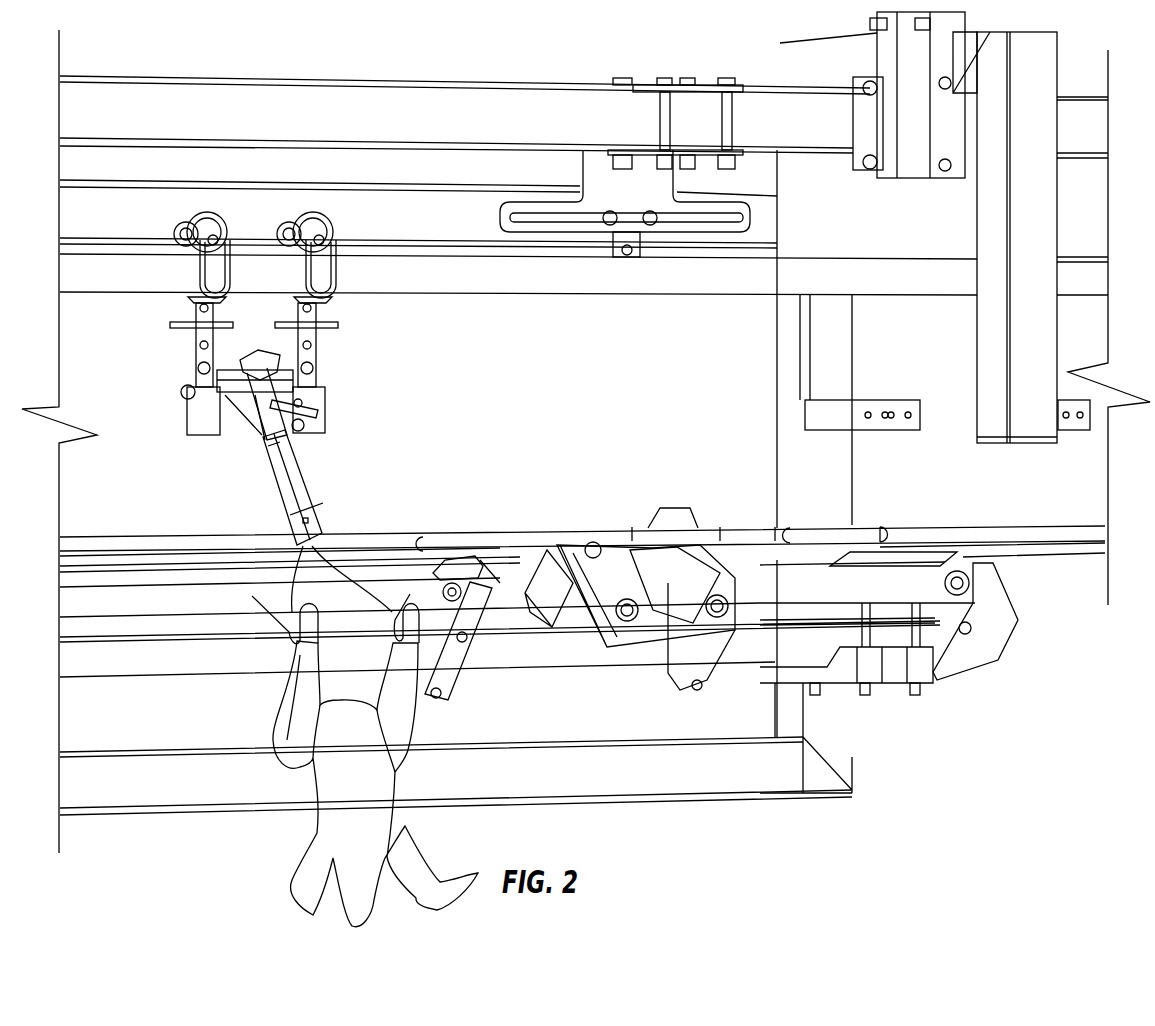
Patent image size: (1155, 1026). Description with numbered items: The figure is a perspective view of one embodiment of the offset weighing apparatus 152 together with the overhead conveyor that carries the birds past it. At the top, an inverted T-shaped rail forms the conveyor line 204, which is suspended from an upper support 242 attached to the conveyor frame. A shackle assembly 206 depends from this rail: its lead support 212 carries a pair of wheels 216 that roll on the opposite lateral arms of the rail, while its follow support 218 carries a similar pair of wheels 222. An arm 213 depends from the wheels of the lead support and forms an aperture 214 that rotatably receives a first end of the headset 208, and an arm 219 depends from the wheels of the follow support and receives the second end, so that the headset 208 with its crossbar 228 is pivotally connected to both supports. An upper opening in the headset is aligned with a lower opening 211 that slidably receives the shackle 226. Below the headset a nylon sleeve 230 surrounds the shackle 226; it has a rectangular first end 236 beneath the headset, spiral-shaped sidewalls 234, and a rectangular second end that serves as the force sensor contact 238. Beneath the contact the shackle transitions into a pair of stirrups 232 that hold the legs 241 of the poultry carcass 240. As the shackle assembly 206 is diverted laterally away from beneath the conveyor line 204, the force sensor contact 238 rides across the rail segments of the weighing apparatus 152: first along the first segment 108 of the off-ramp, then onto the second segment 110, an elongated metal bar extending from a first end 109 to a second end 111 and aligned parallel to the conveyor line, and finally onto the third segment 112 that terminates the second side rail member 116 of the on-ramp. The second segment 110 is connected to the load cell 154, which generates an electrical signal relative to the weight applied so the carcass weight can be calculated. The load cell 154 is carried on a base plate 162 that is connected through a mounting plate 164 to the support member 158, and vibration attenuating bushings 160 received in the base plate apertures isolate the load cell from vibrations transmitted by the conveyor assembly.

The upper support 242 is at (378, 100).
The conveyor line 204 is at (527, 284).
The wheels 222 is at (175, 226).
The wheels 216 is at (328, 228).
The follow support 218 is at (175, 310).
The lead support 212 is at (365, 310).
The headset 208 is at (348, 343).
The aperture 214 is at (325, 385).
The shackle assembly 206 is at (363, 405).
The crossbar 228 is at (181, 392).
The arm 213 is at (322, 433).
The arm 219 is at (190, 435).
The lower opening 211 is at (265, 441).
The sidewall 234 is at (293, 475).
The rectangular first end 236 is at (268, 480).
The shackle 226 is at (335, 497).
The force sensor contact 238 is at (322, 527).
The sleeve 230 is at (293, 497).
The stirrups 232 is at (250, 614).
The legs 241 is at (298, 695).
The poultry carcass 240 is at (335, 812).
The first segment 108 is at (515, 540).
The first end 109 is at (638, 540).
The load cell 154 is at (665, 515).
The second segment 110 is at (728, 540).
The second end 111 is at (775, 540).
The third segment 112 is at (838, 535).
The second side rail member 116 is at (975, 540).
The support member 158 is at (481, 660).
The base plate 162 is at (605, 588).
The weighing apparatus 152 is at (600, 655).
The vibration attenuating bushings 160 is at (630, 615).
The mounting plate 164 is at (673, 635).